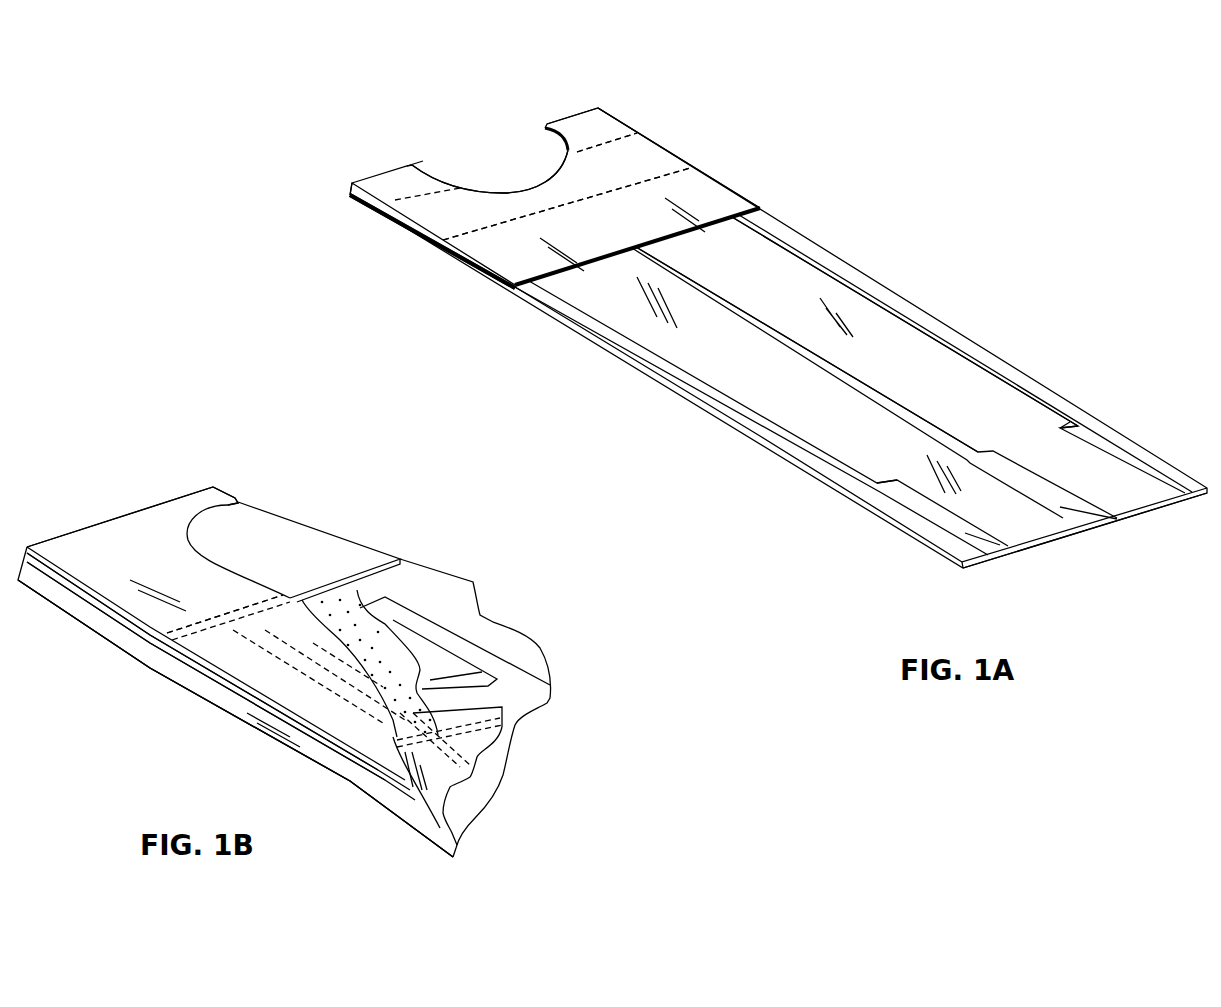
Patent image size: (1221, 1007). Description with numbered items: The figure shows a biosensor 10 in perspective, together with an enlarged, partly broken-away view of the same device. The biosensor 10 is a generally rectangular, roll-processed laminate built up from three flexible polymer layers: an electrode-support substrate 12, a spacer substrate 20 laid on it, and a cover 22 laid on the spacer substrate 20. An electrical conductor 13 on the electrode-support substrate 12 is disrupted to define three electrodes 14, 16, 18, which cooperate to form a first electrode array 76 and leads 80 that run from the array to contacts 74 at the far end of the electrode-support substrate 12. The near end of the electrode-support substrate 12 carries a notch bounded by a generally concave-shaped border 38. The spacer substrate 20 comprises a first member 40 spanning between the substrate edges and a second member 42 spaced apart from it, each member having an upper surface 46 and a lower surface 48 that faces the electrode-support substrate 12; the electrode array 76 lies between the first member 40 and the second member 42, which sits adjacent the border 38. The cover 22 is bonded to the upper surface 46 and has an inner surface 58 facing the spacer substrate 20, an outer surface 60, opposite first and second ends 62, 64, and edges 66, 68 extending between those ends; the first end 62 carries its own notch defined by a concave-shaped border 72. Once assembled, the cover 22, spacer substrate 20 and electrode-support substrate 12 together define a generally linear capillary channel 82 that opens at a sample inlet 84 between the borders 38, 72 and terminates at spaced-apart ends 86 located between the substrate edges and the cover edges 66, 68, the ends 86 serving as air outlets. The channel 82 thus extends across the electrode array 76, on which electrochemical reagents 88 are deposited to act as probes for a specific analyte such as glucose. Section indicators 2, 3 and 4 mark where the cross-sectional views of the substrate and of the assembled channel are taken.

In FIG. 1A, the biosensor 10 is at (1000, 212).
In FIG. 1A, the electrode-support substrate 12 is at (898, 546).
In FIG. 1B, the electrode-support substrate 12 is at (506, 630).
In FIG. 1A, the electrical conductor 13 is at (1030, 420).
In FIG. 1A, the electrode 14 is at (600, 324).
In FIG. 1A, the electrode 16 is at (860, 374).
In FIG. 1A, the electrode 18 is at (839, 274).
In FIG. 1A, the spacer substrate 20 is at (362, 199).
In FIG. 1B, the spacer substrate 20 is at (259, 525).
In FIG. 1A, the cover 22 is at (602, 130).
In FIG. 1B, the cover 22 is at (79, 551).
In FIG. 1A, the concave-shaped border 38 is at (568, 156).
In FIG. 1B, the concave-shaped border 38 is at (433, 570).
In FIG. 1B, the first member 40 is at (417, 808).
In FIG. 1B, the second member 42 is at (318, 531).
In FIG. 1B, the upper surface 46 is at (333, 562).
In FIG. 1B, the lower surface 48 is at (215, 520).
In FIG. 1B, the inner surface 58 is at (332, 716).
In FIG. 1A, the outer surface 60 is at (622, 230).
In FIG. 1A, the first end 62 is at (578, 115).
In FIG. 1A, the second end 64 is at (733, 217).
In FIG. 1A, the edge 66 is at (487, 268).
In FIG. 1B, the edge 66 is at (373, 771).
In FIG. 1A, the edge 68 is at (727, 181).
In FIG. 1A, the concave-shaped border 72 is at (423, 172).
In FIG. 1B, the concave-shaped border 72 is at (232, 492).
In FIG. 1A, the contacts 74 is at (1062, 507).
In FIG. 1B, the first electrode array 76 is at (441, 641).
In FIG. 1A, the leads 80 is at (977, 363).
In FIG. 1A, the capillary channel 82 is at (638, 150).
In FIG. 1B, the capillary channel 82 is at (258, 661).
In FIG. 1A, the sample inlet 84 is at (533, 177).
In FIG. 1A, the ends 86 is at (663, 137).
In FIG. 1B, the ends 86 is at (198, 668).
In FIG. 1B, the electrochemical reagents 88 is at (421, 670).
In FIG. 1B, the strip assembly 2 is at (52, 596).
In FIG. 1A, the section line 3- 3 is at (1027, 363).
In FIG. 1A, the section line 4- 4 is at (693, 148).